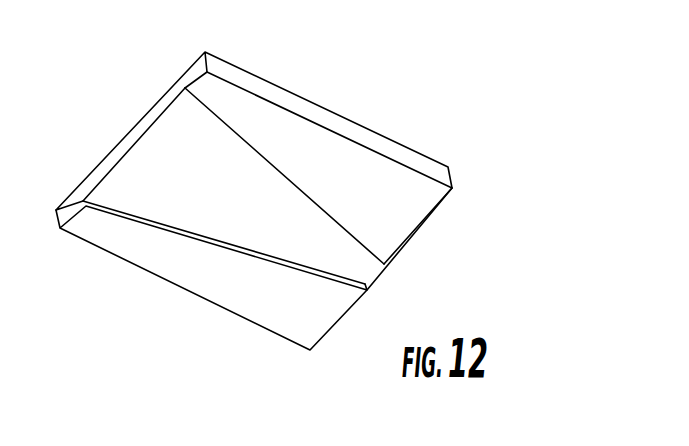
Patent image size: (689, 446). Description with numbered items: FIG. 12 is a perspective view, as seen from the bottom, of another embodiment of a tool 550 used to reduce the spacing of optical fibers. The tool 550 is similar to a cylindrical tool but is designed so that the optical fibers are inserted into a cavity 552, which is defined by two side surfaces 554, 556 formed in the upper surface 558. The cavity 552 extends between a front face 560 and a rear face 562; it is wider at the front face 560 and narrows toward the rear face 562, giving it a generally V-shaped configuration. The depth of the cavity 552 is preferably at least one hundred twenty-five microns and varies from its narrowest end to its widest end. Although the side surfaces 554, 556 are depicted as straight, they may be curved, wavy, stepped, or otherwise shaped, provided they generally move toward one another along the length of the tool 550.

The tool 550 is at (492, 168).
The cavity 552 is at (205, 188).
The side surface 554 is at (268, 259).
The side surface 556 is at (316, 204).
The upper surface 558 is at (315, 140).
The front face 560 is at (193, 67).
The rear face 562 is at (427, 217).